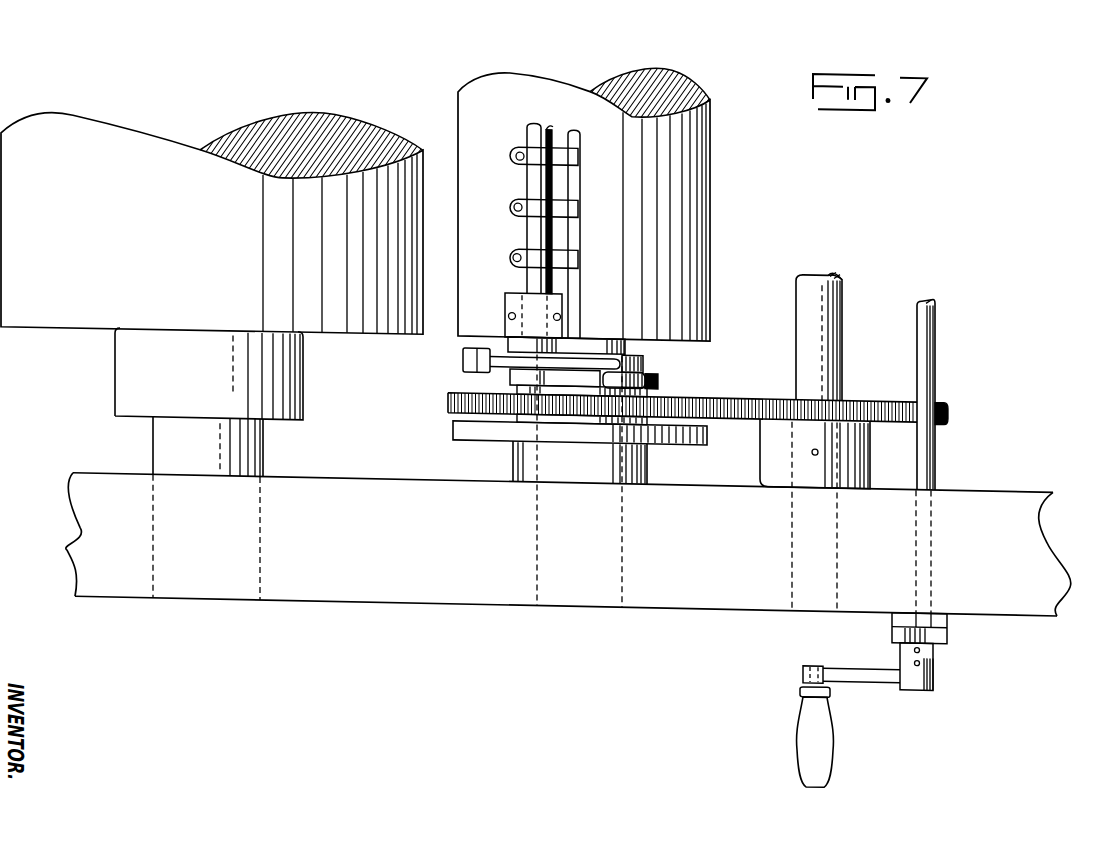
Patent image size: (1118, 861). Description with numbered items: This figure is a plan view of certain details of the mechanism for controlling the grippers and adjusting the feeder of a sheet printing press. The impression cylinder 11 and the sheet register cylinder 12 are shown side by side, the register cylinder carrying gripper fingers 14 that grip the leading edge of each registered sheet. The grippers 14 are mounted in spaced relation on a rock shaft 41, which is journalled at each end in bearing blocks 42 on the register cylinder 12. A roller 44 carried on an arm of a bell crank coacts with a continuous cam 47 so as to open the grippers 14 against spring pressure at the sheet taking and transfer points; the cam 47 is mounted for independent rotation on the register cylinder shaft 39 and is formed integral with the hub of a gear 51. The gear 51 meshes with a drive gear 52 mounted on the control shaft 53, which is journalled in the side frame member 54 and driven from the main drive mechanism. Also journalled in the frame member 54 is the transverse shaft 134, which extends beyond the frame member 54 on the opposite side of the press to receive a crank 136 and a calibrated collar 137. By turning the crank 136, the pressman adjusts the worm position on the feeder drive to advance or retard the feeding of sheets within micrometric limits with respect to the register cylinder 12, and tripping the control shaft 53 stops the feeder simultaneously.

The impression cylinder 11 is at (68, 317).
The sheet register cylinder 12 is at (690, 284).
The gripper fingers 14 is at (572, 260).
The register cylinder shaft 39 is at (592, 347).
The rock shaft 41 is at (528, 186).
The bearing blocks 42 is at (558, 305).
The roller 44 is at (655, 367).
The continuous cam 47 is at (515, 378).
The gear 51 is at (667, 400).
The drive gear 52 is at (853, 397).
The control shaft 53 is at (830, 330).
The side frame member 54 is at (1030, 544).
The transverse shaft 134 is at (928, 450).
The crank 136 is at (827, 688).
The calibrated collar 137 is at (927, 625).